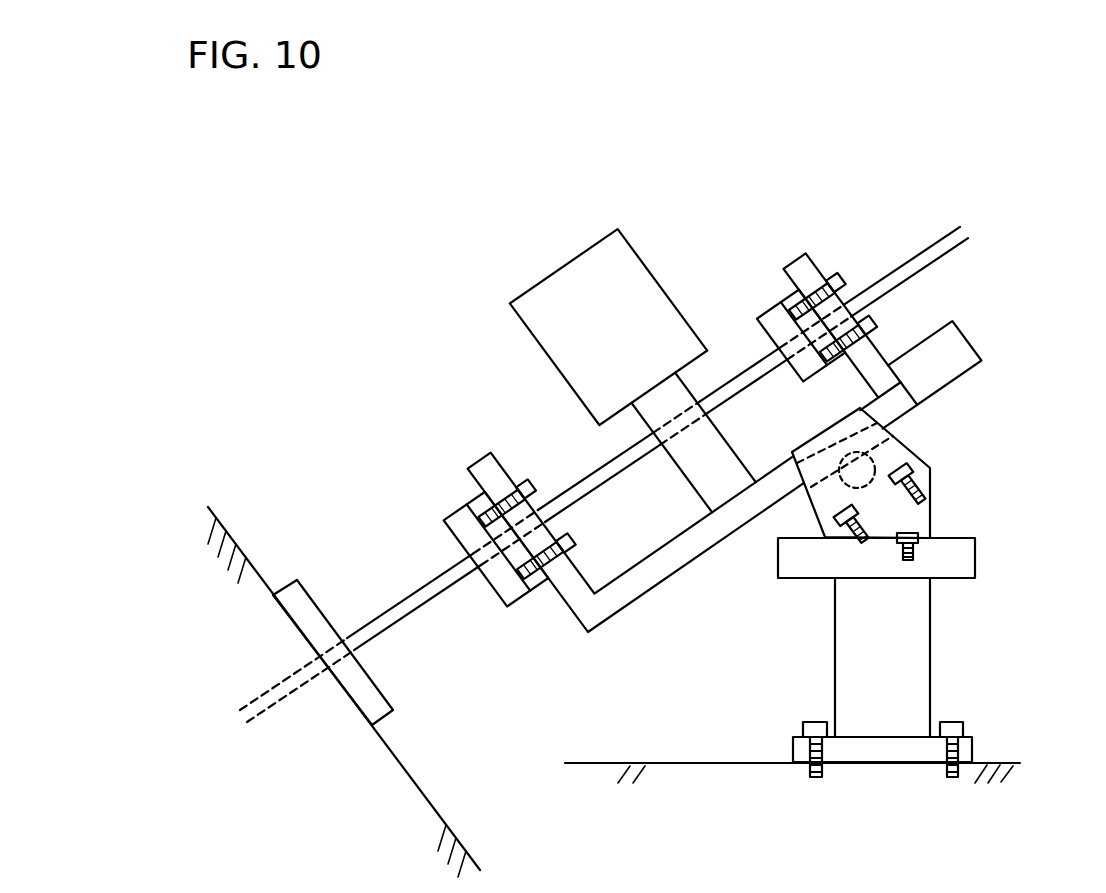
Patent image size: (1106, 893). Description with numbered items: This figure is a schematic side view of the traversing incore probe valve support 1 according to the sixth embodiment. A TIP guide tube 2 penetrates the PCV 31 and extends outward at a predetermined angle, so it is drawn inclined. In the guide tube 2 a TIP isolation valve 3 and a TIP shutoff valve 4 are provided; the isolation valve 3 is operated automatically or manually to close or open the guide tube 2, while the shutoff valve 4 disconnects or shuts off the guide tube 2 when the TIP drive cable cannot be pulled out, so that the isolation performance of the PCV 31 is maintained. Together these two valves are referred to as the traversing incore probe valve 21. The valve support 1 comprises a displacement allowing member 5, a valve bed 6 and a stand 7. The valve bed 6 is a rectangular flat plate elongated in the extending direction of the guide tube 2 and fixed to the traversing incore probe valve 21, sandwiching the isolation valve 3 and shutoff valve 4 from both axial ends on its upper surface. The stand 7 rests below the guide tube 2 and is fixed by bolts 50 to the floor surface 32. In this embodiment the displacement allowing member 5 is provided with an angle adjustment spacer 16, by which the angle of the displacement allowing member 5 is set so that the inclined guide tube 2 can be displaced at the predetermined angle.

The traversing incore probe valve support 1 is at (997, 538).
The TIP guide tube 2 is at (447, 583).
The TIP isolation valve 3 is at (667, 398).
The TIP shutoff valve 4 is at (782, 322).
The displacement allowing member 5 is at (888, 462).
The valve bed 6 is at (965, 355).
The stand 7 is at (888, 622).
The angle adjustment spacer 16 is at (915, 515).
The traversing incore probe valve 21 is at (800, 192).
The PCV 31 is at (260, 568).
The floor surface 32 is at (703, 775).
The bolts 50 is at (950, 722).